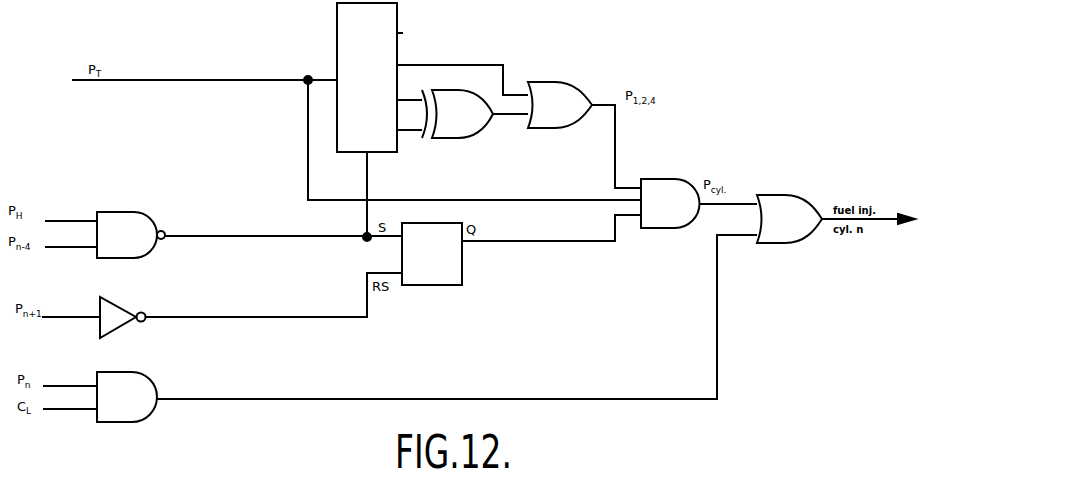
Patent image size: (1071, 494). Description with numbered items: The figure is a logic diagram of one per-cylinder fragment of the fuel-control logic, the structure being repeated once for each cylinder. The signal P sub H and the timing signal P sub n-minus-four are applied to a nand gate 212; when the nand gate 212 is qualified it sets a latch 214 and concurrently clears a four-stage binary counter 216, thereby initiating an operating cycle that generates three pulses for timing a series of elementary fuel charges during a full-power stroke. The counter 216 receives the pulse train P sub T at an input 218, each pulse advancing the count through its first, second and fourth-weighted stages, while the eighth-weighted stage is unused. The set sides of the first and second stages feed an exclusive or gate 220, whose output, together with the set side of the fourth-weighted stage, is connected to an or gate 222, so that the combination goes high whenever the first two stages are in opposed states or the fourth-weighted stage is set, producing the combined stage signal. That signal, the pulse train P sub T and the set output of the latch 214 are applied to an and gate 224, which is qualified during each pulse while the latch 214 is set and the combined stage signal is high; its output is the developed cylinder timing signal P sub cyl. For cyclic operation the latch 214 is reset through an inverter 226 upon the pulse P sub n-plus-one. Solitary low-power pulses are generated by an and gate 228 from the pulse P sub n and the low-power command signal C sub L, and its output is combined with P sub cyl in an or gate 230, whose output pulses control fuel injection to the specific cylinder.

The nand gate 212 is at (137, 212).
The latch 214 is at (462, 278).
The four-stage binary counter 216 is at (397, 22).
The input 218 is at (323, 78).
The exclusive or gate 220 is at (458, 138).
The or gate 222 is at (572, 85).
The and gate 224 is at (668, 179).
The inverter 226 is at (128, 303).
The and gate 228 is at (150, 381).
The or gate 230 is at (795, 197).